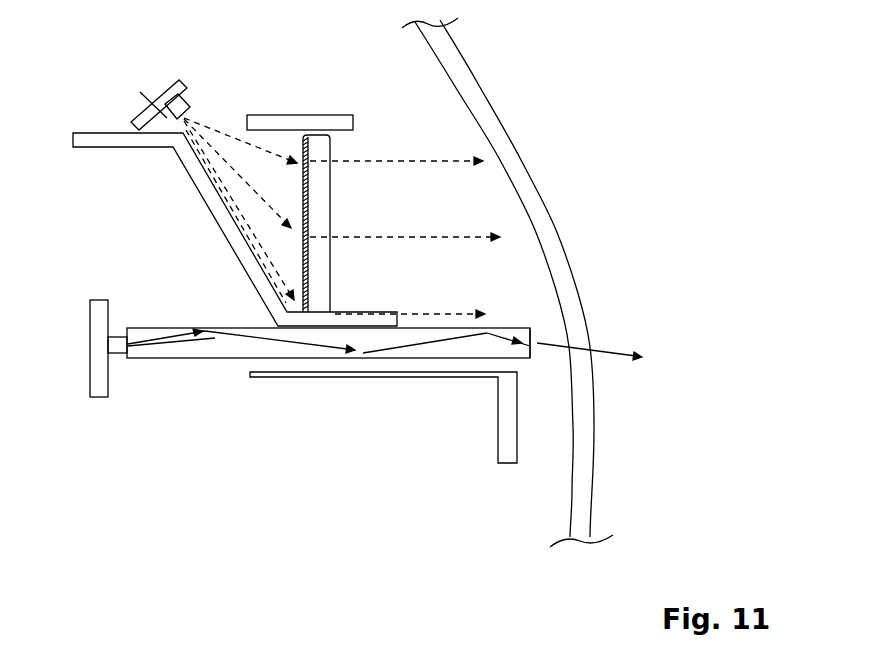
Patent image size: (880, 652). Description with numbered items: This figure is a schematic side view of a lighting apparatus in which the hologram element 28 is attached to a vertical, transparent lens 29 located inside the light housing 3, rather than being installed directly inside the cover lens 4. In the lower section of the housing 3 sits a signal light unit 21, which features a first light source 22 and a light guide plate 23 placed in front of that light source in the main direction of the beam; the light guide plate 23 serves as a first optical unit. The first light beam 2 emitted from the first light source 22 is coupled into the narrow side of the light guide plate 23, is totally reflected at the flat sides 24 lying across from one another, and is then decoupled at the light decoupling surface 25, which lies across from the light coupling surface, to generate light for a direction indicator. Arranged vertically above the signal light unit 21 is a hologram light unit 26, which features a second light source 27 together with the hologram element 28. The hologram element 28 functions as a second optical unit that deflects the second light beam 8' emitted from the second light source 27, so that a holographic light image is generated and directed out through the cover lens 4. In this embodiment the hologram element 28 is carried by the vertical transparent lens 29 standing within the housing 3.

The first light beam 2 is at (417, 345).
The housing 3 is at (432, 226).
The cover lens 4 is at (560, 268).
The second light beam 8' is at (423, 113).
The signal light unit 21 is at (193, 410).
The first light source 22 is at (100, 300).
The light guide plate 23 is at (172, 350).
The flat sides 24 is at (172, 330).
The light decoupling surface 25 is at (531, 350).
The hologram light unit 26 is at (367, 78).
The second light source 27 is at (200, 188).
The hologram element 28 is at (303, 151).
The vertical transparent lens 29 is at (326, 150).